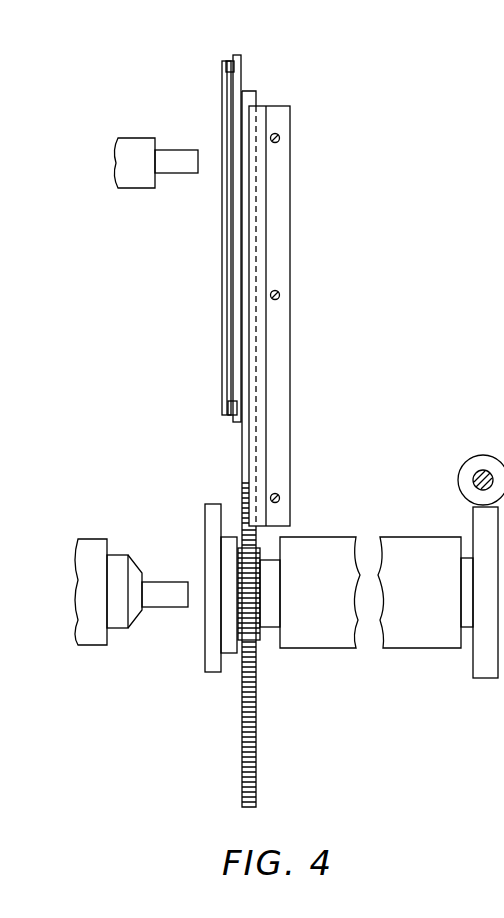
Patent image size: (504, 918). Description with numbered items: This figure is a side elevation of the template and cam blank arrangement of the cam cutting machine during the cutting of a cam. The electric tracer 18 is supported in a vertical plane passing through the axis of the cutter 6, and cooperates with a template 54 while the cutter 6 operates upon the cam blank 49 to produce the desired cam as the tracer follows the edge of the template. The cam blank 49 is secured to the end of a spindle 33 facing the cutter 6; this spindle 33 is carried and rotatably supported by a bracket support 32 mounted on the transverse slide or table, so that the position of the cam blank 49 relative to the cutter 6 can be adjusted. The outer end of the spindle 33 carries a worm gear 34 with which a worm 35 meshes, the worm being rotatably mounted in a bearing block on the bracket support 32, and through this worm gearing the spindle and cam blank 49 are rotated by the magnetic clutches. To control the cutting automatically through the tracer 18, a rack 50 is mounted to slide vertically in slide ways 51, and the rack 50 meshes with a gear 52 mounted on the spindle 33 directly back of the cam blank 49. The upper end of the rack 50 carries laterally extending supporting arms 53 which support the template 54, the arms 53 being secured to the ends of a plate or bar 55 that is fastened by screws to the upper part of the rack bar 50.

The cutter 6 is at (162, 600).
The electric tracer 18 is at (180, 168).
The bracket support 32 is at (370, 592).
The spindle 33 is at (467, 647).
The worm gear 34 is at (480, 667).
The worm 35 is at (468, 472).
The cam blank 49 is at (212, 510).
The rack 50 is at (243, 98).
The slide ways 51 is at (283, 193).
The gear 52 is at (262, 622).
The supporting arms 53 is at (228, 61).
The template 54 is at (223, 360).
The plate or bar 55 is at (240, 77).